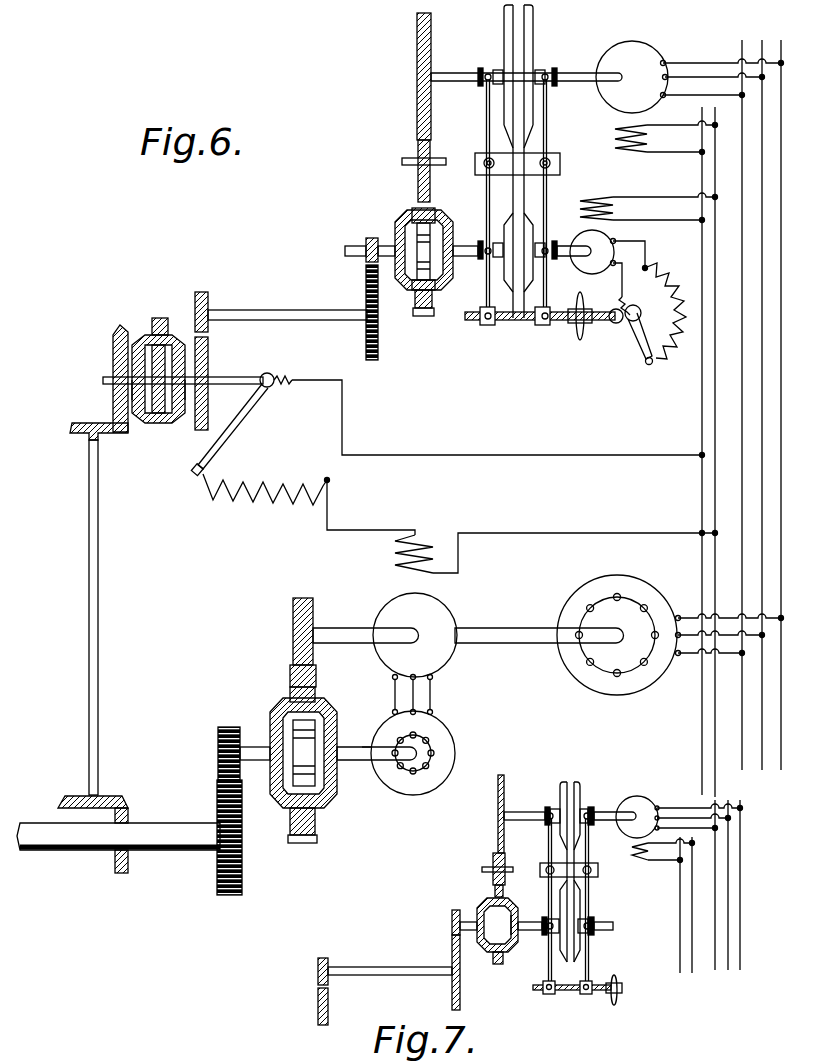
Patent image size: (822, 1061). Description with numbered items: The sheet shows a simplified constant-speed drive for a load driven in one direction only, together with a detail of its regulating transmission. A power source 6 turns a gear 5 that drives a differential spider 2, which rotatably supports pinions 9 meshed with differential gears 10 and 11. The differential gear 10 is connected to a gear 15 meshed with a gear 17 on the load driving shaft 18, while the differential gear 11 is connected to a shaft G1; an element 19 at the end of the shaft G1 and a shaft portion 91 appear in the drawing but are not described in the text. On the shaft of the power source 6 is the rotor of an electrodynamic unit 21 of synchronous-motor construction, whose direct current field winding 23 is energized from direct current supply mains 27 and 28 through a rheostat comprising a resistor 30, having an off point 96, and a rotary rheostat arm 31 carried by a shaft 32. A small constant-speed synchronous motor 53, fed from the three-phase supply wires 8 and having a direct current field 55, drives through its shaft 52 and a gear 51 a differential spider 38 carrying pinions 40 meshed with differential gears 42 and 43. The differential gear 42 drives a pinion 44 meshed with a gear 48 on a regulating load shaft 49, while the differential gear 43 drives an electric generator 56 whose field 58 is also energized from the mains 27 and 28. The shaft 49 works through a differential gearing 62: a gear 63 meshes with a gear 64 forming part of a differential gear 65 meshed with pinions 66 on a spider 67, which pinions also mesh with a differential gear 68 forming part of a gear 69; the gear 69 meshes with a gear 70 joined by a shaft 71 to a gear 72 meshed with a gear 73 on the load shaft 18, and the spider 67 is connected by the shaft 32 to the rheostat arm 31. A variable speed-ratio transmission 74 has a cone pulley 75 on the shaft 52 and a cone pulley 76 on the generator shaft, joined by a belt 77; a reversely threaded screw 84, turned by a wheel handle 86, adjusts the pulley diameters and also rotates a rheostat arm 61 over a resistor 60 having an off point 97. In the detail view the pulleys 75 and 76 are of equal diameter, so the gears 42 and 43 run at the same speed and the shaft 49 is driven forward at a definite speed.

In FIG. 6, the differential spider 2 is at (316, 690).
In FIG. 6, the gear 5 is at (313, 620).
In FIG. 6, the power source 6 is at (645, 590).
In FIG. 6, the three phase supply wires 8 is at (752, 778).
In FIG. 6, the pinions 9 is at (316, 812).
In FIG. 6, the differential gear 10 is at (270, 724).
In FIG. 6, the differential gear 11 is at (335, 730).
In FIG. 6, the gear 15 is at (218, 740).
In FIG. 6, the gear 17 is at (217, 803).
In FIG. 6, the load driving shaft 18 is at (70, 852).
In FIG. 6, the generator 19 is at (448, 735).
In FIG. 6, the electrodynamic unit 21 is at (442, 660).
In FIG. 6, the direct current field winding 23 is at (426, 553).
In FIG. 6, the direct current supply main 27 is at (702, 768).
In FIG. 6, the direct current supply main 28 is at (715, 786).
In FIG. 6, the resistor 30 is at (290, 505).
In FIG. 6, the rotary rheostat arm 31 is at (236, 428).
In FIG. 6, the rheostat shaft 32 is at (225, 372).
In FIG. 6, the differential spider 38 is at (432, 198).
In FIG. 7, the differential spider 38 is at (506, 896).
In FIG. 6, the pinions 40 is at (430, 292).
In FIG. 6, the differential gear 42 is at (396, 229).
In FIG. 7, the differential gear 42 is at (479, 908).
In FIG. 6, the differential gear 43 is at (449, 236).
In FIG. 7, the differential gear 43 is at (518, 914).
In FIG. 6, the gear 44 is at (366, 247).
In FIG. 7, the gear 44 is at (452, 921).
In FIG. 6, the gear 48 is at (366, 338).
In FIG. 7, the gear 48 is at (452, 992).
In FIG. 6, the regulating load shaft 49 is at (295, 306).
In FIG. 7, the regulating load shaft 49 is at (386, 967).
In FIG. 6, the gear 51 is at (431, 101).
In FIG. 7, the gear 51 is at (504, 786).
In FIG. 6, the shaft 52 is at (452, 73).
In FIG. 7, the shaft 52 is at (524, 813).
In FIG. 6, the synchronous motor 53 is at (610, 60).
In FIG. 7, the synchronous motor 53 is at (636, 796).
In FIG. 6, the direct current field 55 is at (648, 139).
In FIG. 6, the electric generator 56 is at (590, 270).
In FIG. 6, the field 58 is at (614, 208).
In FIG. 6, the resistor 60 is at (668, 286).
In FIG. 6, the rheostat arm 61 is at (645, 338).
In FIG. 6, the differential gearing 62 is at (134, 456).
In FIG. 6, the gear 63 is at (208, 304).
In FIG. 6, the gear 64 is at (208, 348).
In FIG. 6, the differential gear 65 is at (186, 388).
In FIG. 6, the differential pinions 66 is at (170, 424).
In FIG. 6, the differential spider 67 is at (160, 318).
In FIG. 6, the differential gear 68 is at (132, 388).
In FIG. 6, the gear 69 is at (113, 350).
In FIG. 6, the gear 70 is at (70, 432).
In FIG. 6, the shaft 71 is at (89, 604).
In FIG. 6, the gear 72 is at (108, 796).
In FIG. 6, the gear 73 is at (128, 814).
In FIG. 6, the variable speed-ratio transmission device 74 is at (570, 163).
In FIG. 7, the variable speed-ratio transmission device 74 is at (592, 872).
In FIG. 7, the cone pulley 75 is at (581, 795).
In FIG. 7, the cone pulley 76 is at (581, 952).
In FIG. 7, the belt 77 is at (570, 855).
In FIG. 7, the reversely threaded screw 84 is at (564, 992).
In FIG. 6, the wheel handle 86 is at (580, 337).
In FIG. 7, the wheel handle 86 is at (617, 983).
In FIG. 6, the shaft 91 is at (466, 258).
In FIG. 7, the shaft 91 is at (532, 930).
In FIG. 6, the off point 96 is at (193, 474).
In FIG. 6, the off point 97 is at (649, 365).
In FIG. 6, the shaft G1 is at (362, 762).